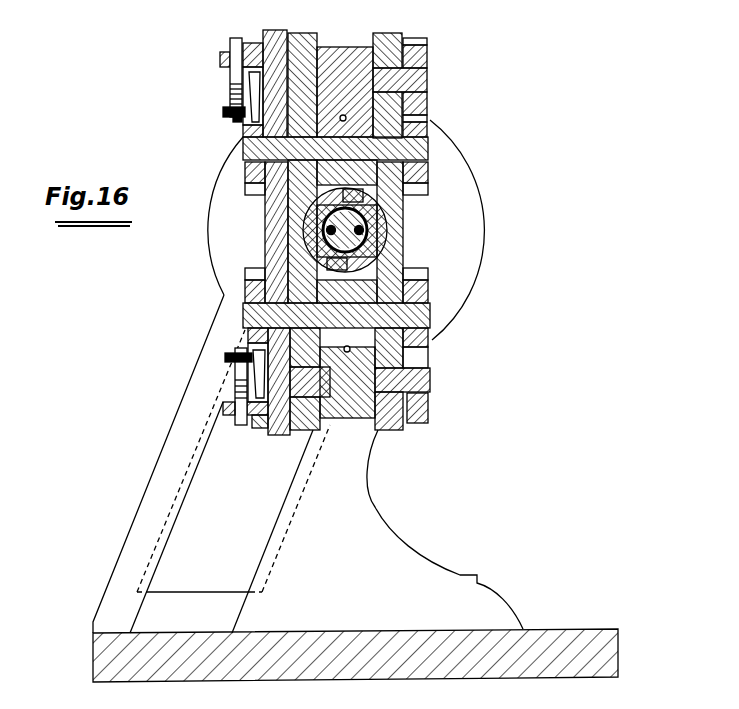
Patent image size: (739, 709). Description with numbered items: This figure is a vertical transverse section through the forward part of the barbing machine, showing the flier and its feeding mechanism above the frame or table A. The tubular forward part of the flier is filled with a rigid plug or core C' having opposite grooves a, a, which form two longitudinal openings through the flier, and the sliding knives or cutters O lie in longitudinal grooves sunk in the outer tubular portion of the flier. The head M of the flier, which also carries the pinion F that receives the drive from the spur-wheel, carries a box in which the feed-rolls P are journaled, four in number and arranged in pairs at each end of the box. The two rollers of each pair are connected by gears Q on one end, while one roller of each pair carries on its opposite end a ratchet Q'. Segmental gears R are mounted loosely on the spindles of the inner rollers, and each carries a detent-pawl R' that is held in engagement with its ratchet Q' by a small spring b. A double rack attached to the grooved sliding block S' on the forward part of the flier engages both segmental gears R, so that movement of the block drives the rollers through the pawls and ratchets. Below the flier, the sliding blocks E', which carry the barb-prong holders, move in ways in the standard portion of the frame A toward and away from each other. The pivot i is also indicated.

The frame or table A is at (355, 556).
The sliding block E' is at (211, 464).
The head of the flier M is at (346, 230).
The feed-roll P is at (336, 233).
The segmental gear R is at (261, 242).
The grooved sliding block S' is at (286, 231).
The gear Q is at (410, 231).
The ratchet Q' is at (229, 235).
The spring b is at (230, 90).
The detent-pawl R' is at (215, 261).
The sliding knife or cutter O is at (292, 265).
The pinion F is at (348, 231).
The rigid plug or core C' is at (374, 232).
The groove a is at (330, 232).
The pivot i is at (346, 235).